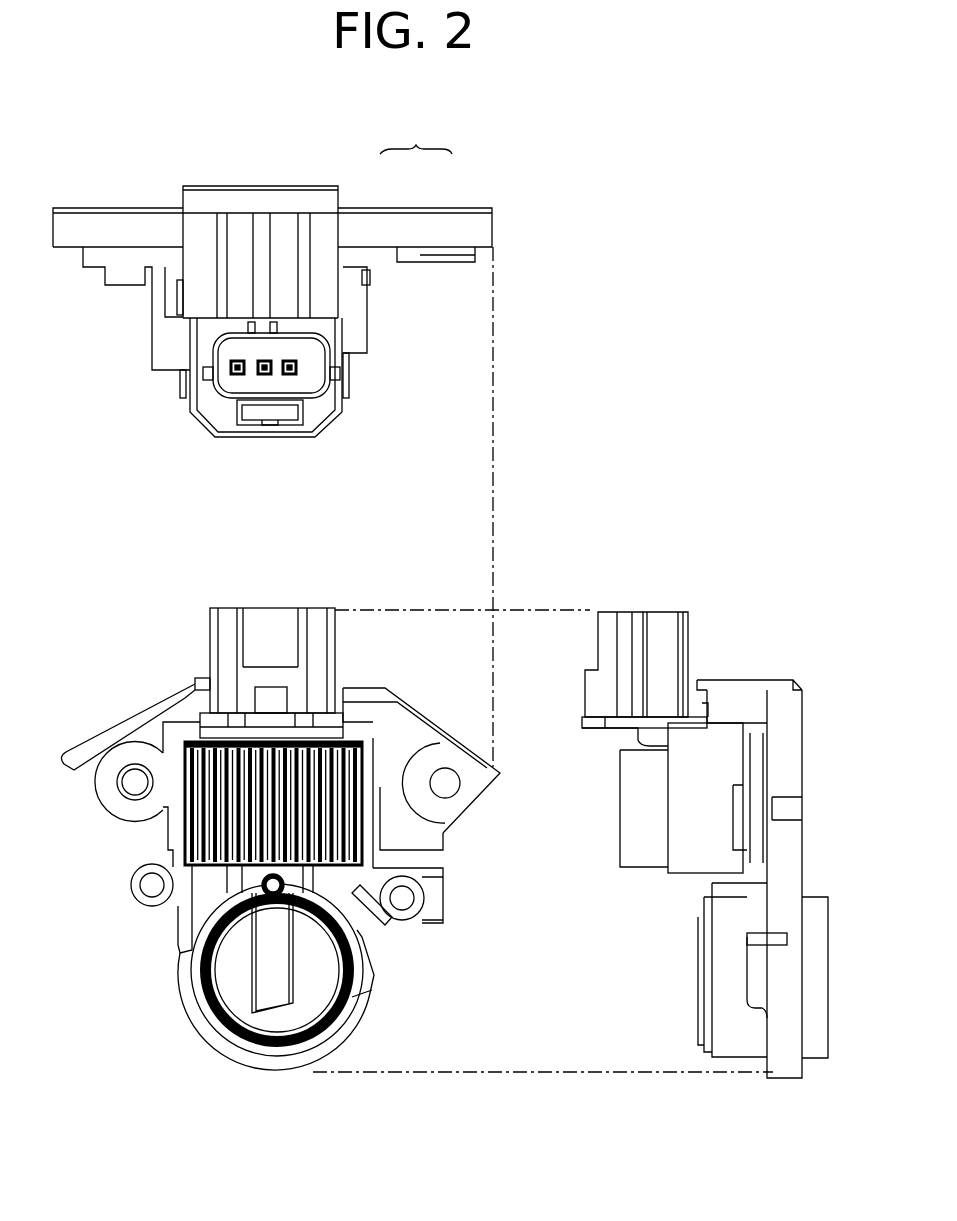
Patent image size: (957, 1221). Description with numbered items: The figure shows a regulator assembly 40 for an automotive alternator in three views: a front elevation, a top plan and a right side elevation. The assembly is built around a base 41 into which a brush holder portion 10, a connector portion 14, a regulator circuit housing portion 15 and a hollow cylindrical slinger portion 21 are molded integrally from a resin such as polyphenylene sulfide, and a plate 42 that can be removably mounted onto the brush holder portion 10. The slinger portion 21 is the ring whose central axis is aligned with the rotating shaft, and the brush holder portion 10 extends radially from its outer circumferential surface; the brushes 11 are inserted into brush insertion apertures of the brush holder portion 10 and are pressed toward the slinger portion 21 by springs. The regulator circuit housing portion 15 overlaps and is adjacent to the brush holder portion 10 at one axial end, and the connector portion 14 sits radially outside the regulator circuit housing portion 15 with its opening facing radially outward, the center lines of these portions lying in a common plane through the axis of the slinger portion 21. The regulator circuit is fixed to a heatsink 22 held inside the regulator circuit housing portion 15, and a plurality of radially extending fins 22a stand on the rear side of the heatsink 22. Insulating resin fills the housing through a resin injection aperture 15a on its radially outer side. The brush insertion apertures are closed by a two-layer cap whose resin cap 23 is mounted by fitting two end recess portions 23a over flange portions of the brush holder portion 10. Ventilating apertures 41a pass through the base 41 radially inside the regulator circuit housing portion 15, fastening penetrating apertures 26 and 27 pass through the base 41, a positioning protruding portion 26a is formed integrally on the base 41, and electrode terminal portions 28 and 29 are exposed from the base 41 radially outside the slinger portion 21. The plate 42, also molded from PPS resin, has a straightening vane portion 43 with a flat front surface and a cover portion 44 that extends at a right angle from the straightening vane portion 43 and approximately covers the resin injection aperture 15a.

The brush holder portion 10 is at (287, 313).
The brushes 11 is at (265, 980).
The connector portion 14 is at (218, 395).
The regulator circuit housing portion 15 is at (168, 347).
The resin injection aperture 15a is at (177, 297).
The slinger portion 21 is at (192, 202).
The heatsink 22 is at (355, 373).
The fins 22a is at (175, 383).
The resin cap 23 is at (742, 700).
The end recess portions 23a is at (727, 698).
The fastening penetrating aperture 26 is at (130, 787).
The positioning protruding portion 26a is at (113, 778).
The fastening penetrating aperture 27 is at (448, 790).
The electrode terminal portion 28 is at (132, 892).
The electrode terminal portion 29 is at (420, 900).
The regulator assembly 40 is at (100, 147).
The base 41 is at (370, 320).
The ventilating apertures 41a is at (357, 935).
The plate 42 is at (792, 670).
The straightening vane portion 43 is at (408, 222).
The cover portion 44 is at (320, 237).